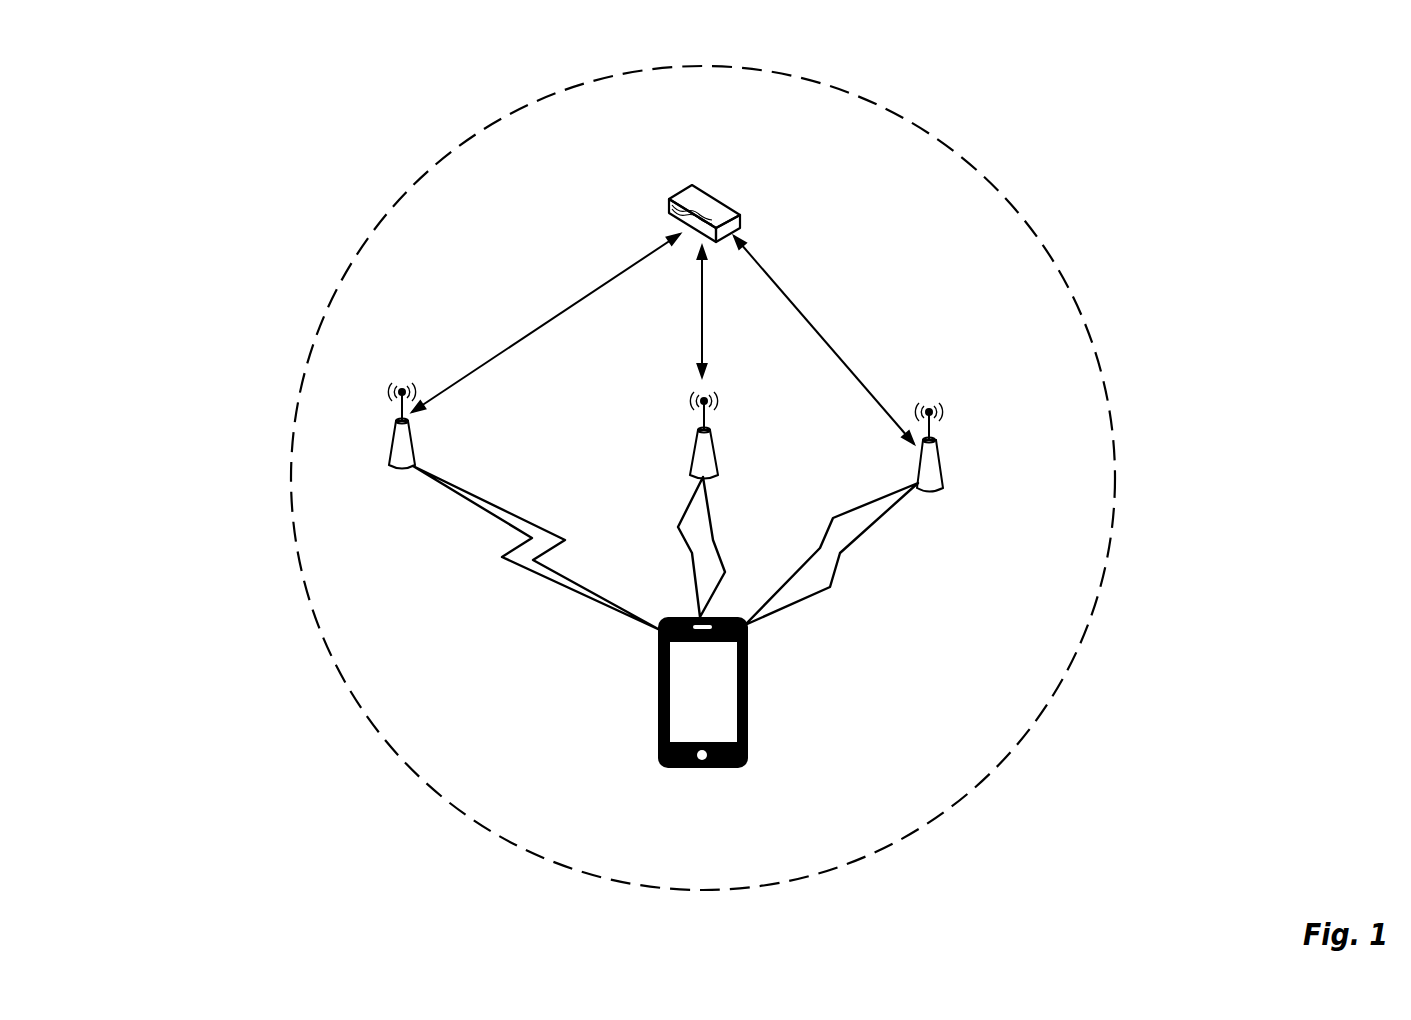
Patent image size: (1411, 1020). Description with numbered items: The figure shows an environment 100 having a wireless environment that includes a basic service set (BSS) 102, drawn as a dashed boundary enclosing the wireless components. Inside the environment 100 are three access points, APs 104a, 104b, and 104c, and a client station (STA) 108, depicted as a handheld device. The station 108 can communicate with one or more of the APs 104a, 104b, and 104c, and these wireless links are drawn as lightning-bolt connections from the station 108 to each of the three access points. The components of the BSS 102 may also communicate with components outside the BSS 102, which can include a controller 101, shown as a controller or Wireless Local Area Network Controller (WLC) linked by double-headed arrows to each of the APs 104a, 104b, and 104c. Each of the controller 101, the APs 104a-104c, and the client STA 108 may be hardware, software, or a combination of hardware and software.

The environment 100 is at (118, 118).
The controller 101 is at (664, 192).
The basic service set 102 is at (295, 417).
The access point 104a is at (719, 436).
The access point 104b is at (949, 449).
The access point 104c is at (421, 429).
The station 108 is at (759, 757).